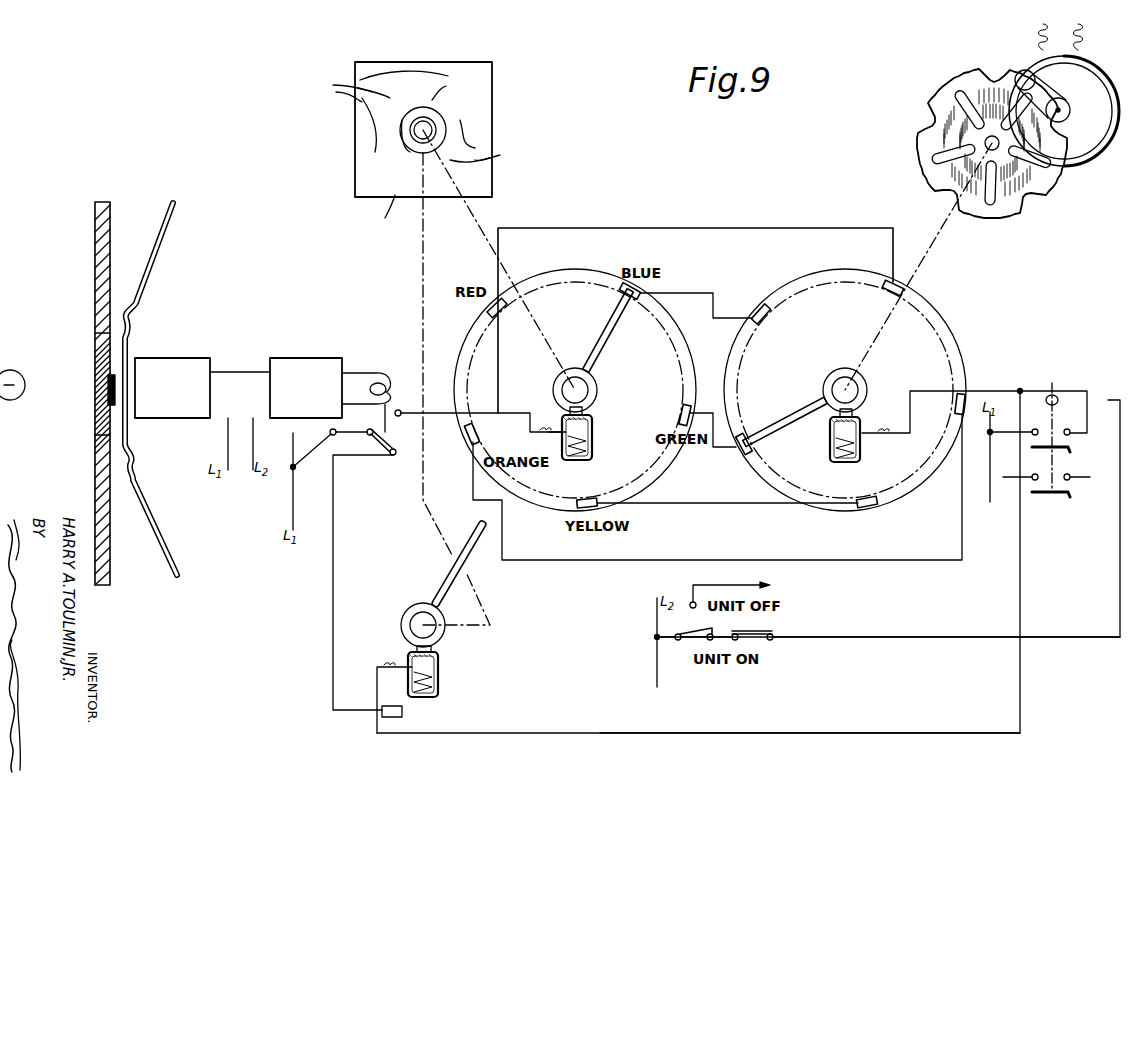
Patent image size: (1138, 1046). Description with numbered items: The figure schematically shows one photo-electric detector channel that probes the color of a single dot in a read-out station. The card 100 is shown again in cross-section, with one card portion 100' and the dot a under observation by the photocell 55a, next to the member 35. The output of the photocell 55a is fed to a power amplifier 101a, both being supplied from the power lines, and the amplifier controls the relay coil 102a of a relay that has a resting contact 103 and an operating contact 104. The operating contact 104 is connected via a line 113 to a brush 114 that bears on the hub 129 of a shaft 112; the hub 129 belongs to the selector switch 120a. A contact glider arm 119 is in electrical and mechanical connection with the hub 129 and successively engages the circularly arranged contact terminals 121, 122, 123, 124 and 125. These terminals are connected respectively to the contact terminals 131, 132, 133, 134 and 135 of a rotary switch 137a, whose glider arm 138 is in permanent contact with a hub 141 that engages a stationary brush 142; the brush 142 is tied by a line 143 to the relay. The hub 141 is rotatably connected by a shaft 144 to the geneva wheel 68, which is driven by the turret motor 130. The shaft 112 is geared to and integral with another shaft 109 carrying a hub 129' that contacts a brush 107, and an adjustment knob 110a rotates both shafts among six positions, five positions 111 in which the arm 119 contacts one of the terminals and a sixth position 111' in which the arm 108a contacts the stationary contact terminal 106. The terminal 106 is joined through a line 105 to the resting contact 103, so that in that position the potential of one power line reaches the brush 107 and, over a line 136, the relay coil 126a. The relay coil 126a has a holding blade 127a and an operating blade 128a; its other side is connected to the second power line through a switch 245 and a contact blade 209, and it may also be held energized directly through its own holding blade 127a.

The card 100 is at (76, 393).
The wall section 100' is at (74, 385).
The dot a is at (113, 385).
The strip member 35 is at (165, 268).
The photocell 55a is at (180, 360).
The power amplifier 101a is at (305, 360).
The relay coil 102a is at (382, 372).
The operating contact 104 is at (399, 410).
The line 113 is at (427, 412).
The resting contact 103 is at (394, 455).
The line 105 is at (334, 562).
The shaft 109 is at (432, 528).
The adjustment knob 110a is at (445, 132).
The positions 111 is at (436, 123).
The sixth position 111' is at (388, 215).
The shaft 112 is at (498, 228).
The selector switch 120a is at (575, 390).
The contact terminal 125 is at (500, 318).
The contact terminal 121 is at (640, 300).
The contact glider arm 119 is at (606, 344).
The hub 129 is at (554, 390).
The brush 114 is at (592, 428).
The contact terminal 122 is at (682, 408).
The contact terminal 124 is at (480, 436).
The contact terminal 123 is at (584, 499).
The contact terminal 131 is at (760, 306).
The rotary switch 137a is at (845, 390).
The contact terminal 135 is at (902, 292).
The hub 141 is at (847, 375).
The line 143 is at (930, 390).
The glider arm 138 is at (782, 420).
The brush 142 is at (861, 426).
The contact terminal 134 is at (956, 413).
The contact terminal 132 is at (744, 456).
The contact terminal 133 is at (862, 510).
The shaft 144 is at (926, 245).
The turret motor 130 is at (1086, 164).
The geneva wheel 68 is at (985, 216).
The relay coil 126a is at (1057, 396).
The holding blade 127a is at (1068, 450).
The operating blade 128a is at (1068, 496).
The hub 129' is at (401, 625).
The arm 108a is at (453, 590).
The brush 107 is at (435, 657).
The stationary contact terminal 106 is at (404, 712).
The contact blade 209 is at (770, 630).
The switch 245 is at (681, 647).
The line 136 is at (855, 733).